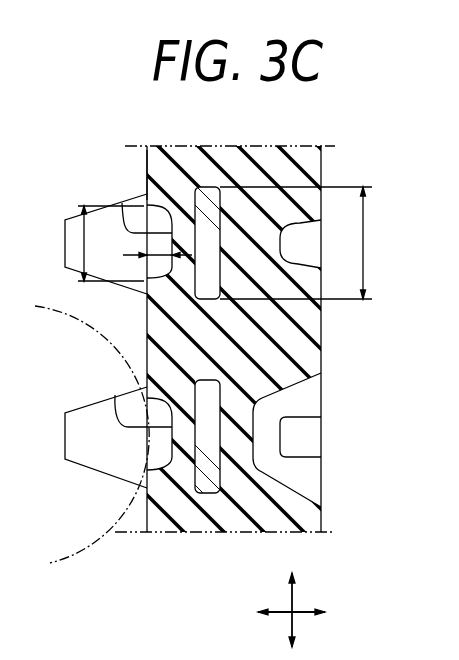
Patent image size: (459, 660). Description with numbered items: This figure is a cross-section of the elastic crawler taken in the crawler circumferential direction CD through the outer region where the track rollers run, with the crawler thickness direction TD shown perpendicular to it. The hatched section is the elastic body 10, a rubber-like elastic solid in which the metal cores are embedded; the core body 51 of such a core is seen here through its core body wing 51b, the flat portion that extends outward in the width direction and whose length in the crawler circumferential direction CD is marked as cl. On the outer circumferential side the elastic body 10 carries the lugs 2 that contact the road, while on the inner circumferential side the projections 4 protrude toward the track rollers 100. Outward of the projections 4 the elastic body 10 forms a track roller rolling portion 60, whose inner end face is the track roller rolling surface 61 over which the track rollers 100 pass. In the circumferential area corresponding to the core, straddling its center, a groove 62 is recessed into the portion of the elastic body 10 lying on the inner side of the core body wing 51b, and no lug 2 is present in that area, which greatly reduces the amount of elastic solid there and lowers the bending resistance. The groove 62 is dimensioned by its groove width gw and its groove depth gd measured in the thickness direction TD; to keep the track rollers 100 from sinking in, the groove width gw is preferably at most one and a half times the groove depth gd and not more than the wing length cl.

The lug 2 is at (321, 163).
The projection 4 is at (75, 240).
The elastic body 10 is at (200, 326).
The core body 51 is at (215, 338).
The core body wing 51b is at (208, 190).
The track roller rolling portion 60 is at (157, 358).
The track roller rolling surface 61 is at (147, 165).
The groove 62 is at (122, 203).
The track roller 100 is at (86, 546).
The groove depth gd is at (158, 254).
The groove width gw is at (83, 263).
The length of the core body wing in the crawler circumferential direction cl is at (375, 243).
The crawler circumferential direction CD is at (292, 599).
The crawler thickness direction TD is at (304, 613).